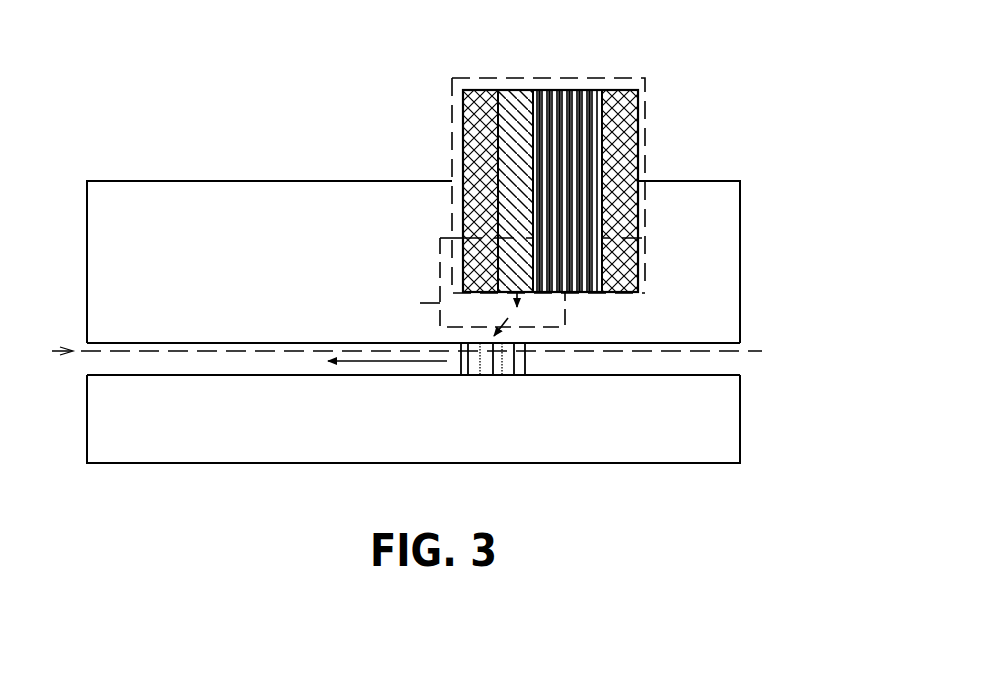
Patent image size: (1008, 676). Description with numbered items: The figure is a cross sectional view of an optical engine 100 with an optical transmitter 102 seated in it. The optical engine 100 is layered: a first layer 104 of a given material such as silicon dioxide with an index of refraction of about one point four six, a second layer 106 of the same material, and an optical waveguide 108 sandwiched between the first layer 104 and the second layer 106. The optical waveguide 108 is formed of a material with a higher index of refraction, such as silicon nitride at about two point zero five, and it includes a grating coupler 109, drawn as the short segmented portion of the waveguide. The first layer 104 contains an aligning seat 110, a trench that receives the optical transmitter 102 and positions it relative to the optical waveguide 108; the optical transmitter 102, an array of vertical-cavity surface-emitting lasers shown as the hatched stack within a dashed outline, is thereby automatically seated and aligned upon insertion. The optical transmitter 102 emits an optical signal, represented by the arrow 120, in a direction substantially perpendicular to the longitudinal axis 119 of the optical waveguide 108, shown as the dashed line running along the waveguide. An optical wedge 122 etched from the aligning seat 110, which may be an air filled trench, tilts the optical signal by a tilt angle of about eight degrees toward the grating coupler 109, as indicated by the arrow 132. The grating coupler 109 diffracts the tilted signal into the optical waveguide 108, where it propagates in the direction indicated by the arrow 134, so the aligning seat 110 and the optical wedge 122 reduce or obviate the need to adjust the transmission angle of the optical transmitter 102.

The optical engine 100 is at (198, 232).
The optical transmitter 102 is at (484, 77).
The first layer 104 is at (86, 220).
The second layer 106 is at (86, 426).
The optical waveguide 108 is at (206, 342).
The grating coupler 109 is at (502, 376).
The aligning seat 110 is at (640, 238).
The longitudinal axis 119 is at (46, 341).
The arrow 120 is at (537, 293).
The optical wedge 122 is at (413, 300).
The arrow 132 is at (508, 320).
The arrow 134 is at (400, 362).